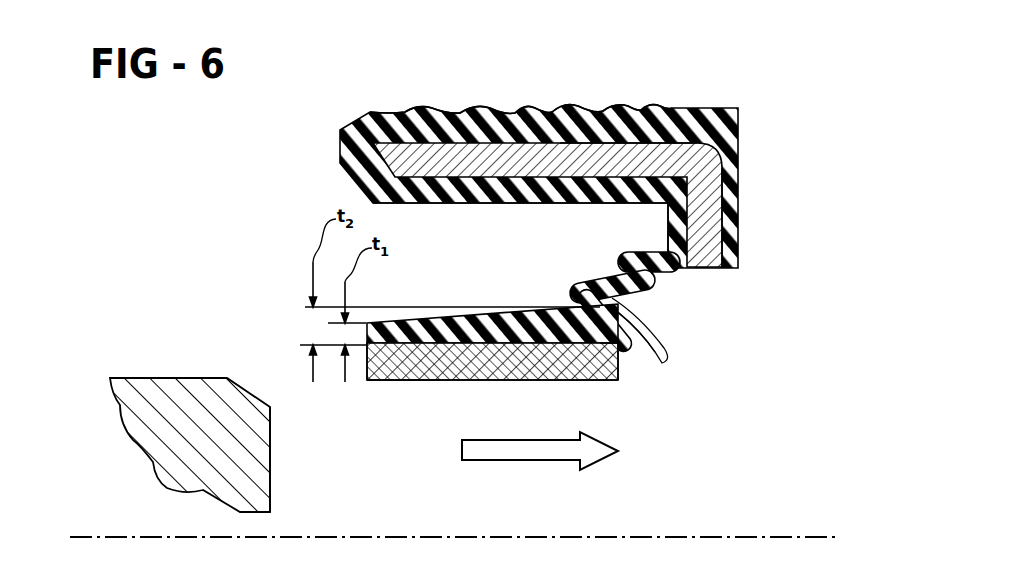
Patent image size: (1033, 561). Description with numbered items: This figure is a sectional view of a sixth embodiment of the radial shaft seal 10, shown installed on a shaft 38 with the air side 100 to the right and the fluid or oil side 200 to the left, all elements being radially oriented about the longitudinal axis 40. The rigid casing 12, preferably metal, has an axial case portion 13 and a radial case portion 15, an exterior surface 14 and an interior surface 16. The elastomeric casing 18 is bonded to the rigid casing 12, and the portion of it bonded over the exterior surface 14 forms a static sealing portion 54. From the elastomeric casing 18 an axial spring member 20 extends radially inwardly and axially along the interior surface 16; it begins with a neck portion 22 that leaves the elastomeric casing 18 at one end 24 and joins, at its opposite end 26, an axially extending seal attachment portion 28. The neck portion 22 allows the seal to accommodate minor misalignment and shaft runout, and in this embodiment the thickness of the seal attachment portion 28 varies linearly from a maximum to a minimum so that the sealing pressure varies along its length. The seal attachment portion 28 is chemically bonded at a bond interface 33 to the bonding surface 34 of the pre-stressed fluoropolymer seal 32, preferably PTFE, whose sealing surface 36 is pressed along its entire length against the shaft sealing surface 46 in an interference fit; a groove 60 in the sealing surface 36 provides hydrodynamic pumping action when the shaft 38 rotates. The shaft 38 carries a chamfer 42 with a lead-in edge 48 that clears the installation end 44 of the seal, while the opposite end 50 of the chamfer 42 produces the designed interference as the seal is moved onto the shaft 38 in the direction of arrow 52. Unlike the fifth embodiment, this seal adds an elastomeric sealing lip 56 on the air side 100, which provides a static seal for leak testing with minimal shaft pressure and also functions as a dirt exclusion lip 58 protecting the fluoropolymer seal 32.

The radial shaft seal 10 is at (578, 225).
The rigid casing 12 is at (601, 163).
The axial case portion 13 is at (678, 163).
The exterior surface 14 is at (556, 144).
The radial case portion 15 is at (705, 187).
The interior surface 16 is at (487, 178).
The elastomeric casing 18 is at (677, 217).
The axial spring member 20 is at (641, 288).
The neck portion 22 is at (624, 284).
The one end 24 is at (678, 270).
The opposite end 26 is at (690, 357).
The seal attachment portion 28 is at (477, 330).
The pre-stressed fluoropolymer seal 32 is at (610, 380).
The bond interface 33 is at (625, 345).
The bonding surface 34 is at (514, 352).
The sealing surface 36 is at (503, 380).
The shaft 38 is at (262, 488).
The longitudinal axis 40 is at (788, 537).
The chamfer 42 is at (228, 412).
The installation end 44 is at (367, 380).
The shaft sealing surface 46 is at (161, 378).
The lead-in edge 48 is at (272, 410).
The opposite end of chamfer 50 is at (226, 378).
The arrow 52 is at (490, 460).
The static sealing portion 54 is at (483, 107).
The elastomeric sealing lip 56 is at (665, 357).
The exclusion lip 58 is at (660, 354).
The groove 60 is at (413, 381).
The air side 100 is at (583, 225).
The fluid side 200 is at (228, 353).